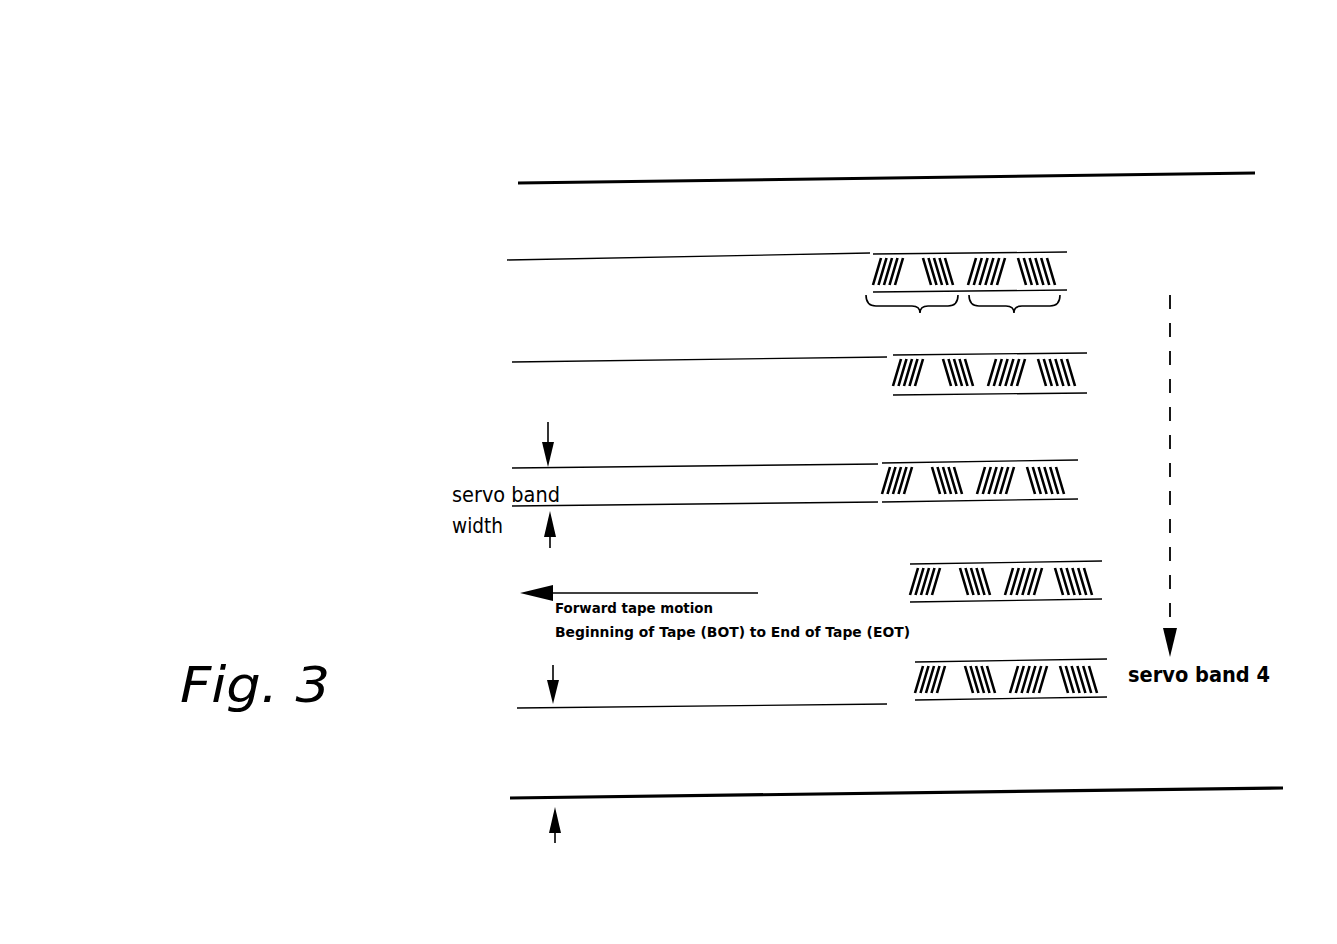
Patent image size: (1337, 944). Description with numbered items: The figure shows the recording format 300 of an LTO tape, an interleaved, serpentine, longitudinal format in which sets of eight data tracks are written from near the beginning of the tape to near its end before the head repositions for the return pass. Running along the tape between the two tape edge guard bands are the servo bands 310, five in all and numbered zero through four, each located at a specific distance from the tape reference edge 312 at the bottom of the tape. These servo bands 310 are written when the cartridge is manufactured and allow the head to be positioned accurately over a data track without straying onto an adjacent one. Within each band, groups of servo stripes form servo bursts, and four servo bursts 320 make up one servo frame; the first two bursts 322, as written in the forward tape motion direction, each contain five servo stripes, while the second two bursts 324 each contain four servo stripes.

The recording format 300 is at (345, 202).
The servo bands 310 is at (1053, 188).
The tape reference edge 312 is at (847, 832).
The servo bursts 320 is at (984, 218).
The first two bursts 322 is at (1022, 313).
The second two bursts 324 is at (911, 313).